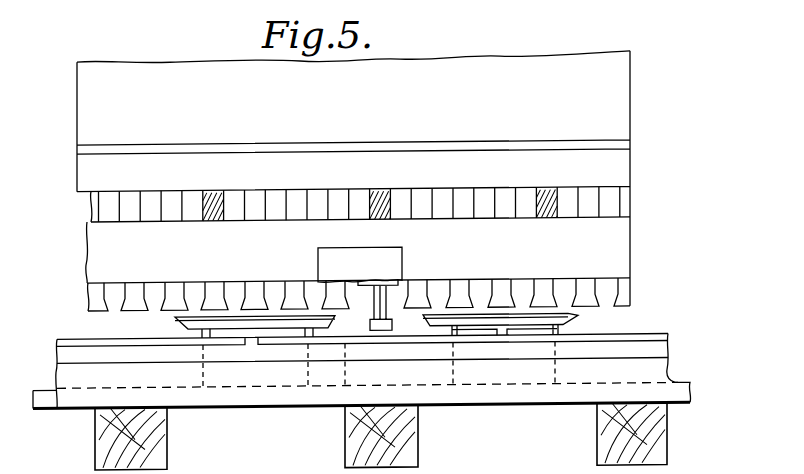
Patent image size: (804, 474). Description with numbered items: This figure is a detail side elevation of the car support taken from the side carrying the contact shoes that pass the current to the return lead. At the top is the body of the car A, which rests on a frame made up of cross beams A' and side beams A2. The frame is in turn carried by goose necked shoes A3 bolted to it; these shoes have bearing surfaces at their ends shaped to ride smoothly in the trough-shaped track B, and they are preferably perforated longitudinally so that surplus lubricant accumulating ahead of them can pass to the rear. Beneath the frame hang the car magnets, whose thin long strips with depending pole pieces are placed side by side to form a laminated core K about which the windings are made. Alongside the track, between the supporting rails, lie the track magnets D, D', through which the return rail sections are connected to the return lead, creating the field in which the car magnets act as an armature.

The car body A is at (353, 181).
The cross beams A' is at (360, 190).
The side beams A2 is at (358, 250).
The goose necked shoes A3 is at (360, 288).
The laminated core K is at (256, 293).
The track magnet D is at (231, 325).
The track magnet D' is at (516, 319).
The track B is at (362, 370).